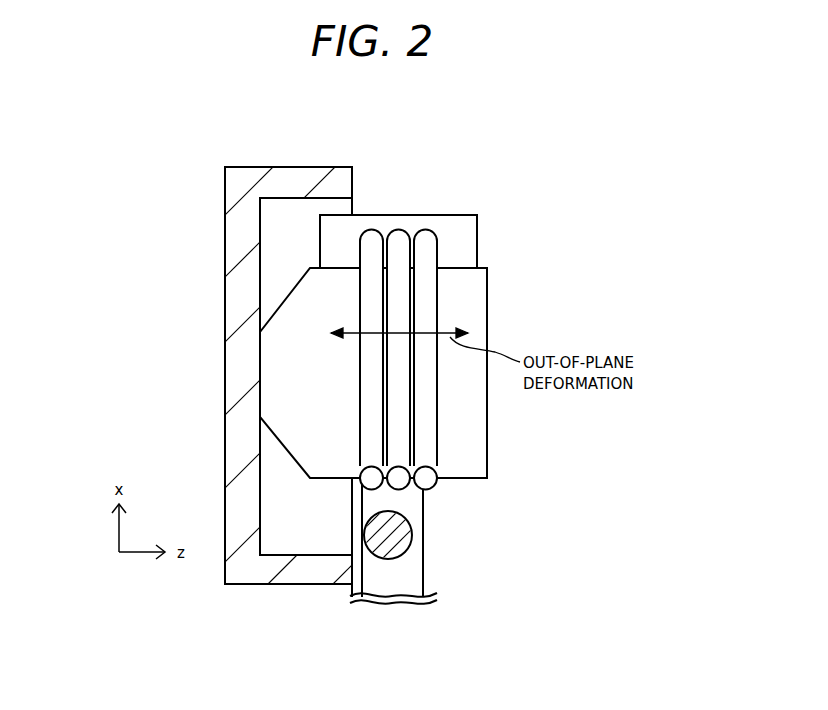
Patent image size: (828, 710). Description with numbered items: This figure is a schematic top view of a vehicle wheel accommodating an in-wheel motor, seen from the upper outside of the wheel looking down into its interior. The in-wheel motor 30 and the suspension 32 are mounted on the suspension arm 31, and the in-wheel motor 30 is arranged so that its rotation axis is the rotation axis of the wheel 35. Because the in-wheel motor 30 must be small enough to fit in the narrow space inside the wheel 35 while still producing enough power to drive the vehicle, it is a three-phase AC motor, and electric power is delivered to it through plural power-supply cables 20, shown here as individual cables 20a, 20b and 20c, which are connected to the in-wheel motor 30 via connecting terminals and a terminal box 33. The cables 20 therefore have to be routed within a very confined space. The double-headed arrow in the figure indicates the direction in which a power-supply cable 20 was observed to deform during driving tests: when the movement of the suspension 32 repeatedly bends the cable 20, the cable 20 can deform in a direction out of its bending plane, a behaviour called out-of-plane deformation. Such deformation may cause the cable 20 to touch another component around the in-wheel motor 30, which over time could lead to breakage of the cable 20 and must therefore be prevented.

The power-supply cables 20 is at (418, 298).
The power-supply cable 20a is at (371, 231).
The power-supply cable 20b is at (398, 231).
The power-supply cable 20c is at (446, 322).
The in-wheel motor 30 is at (487, 290).
The suspension arm 31 is at (413, 570).
The suspension 32 is at (388, 558).
The terminal box 33 is at (477, 233).
The wheel 35 is at (225, 272).